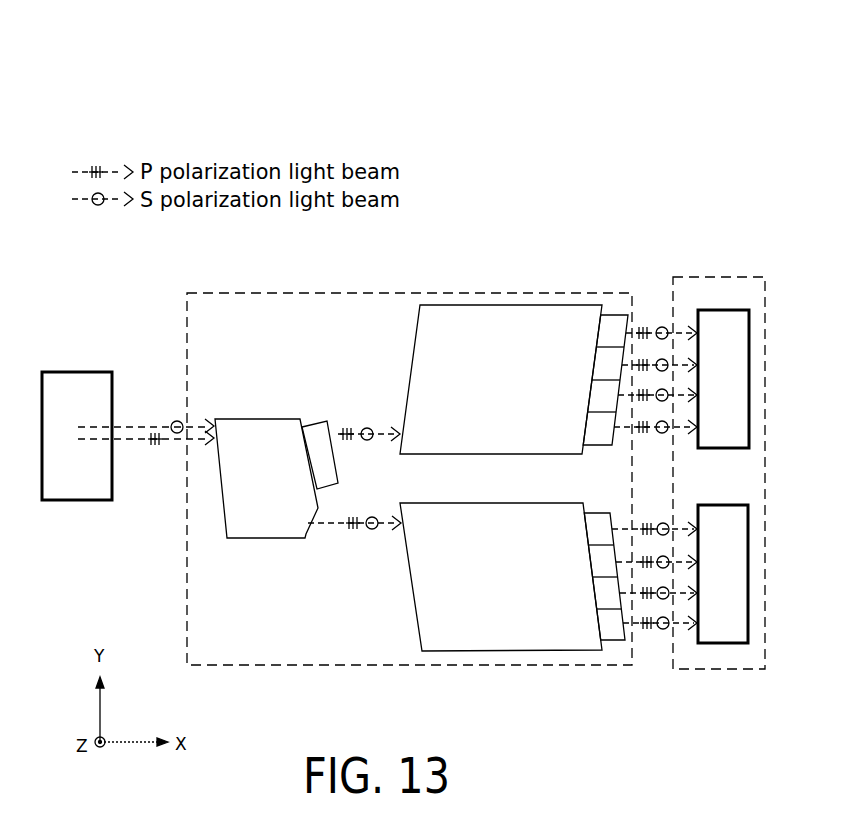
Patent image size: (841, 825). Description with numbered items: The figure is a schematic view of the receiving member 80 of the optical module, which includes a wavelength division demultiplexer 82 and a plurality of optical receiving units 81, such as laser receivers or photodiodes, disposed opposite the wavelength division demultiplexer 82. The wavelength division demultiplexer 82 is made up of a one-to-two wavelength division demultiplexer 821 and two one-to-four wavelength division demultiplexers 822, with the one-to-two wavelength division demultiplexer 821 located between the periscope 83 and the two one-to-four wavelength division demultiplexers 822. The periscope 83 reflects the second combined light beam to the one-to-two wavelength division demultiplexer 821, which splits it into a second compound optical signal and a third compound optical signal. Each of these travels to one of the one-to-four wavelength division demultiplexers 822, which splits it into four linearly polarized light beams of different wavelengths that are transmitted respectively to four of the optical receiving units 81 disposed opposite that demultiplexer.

The receiving member 80 is at (437, 133).
The optical receiving units 81 is at (722, 320).
The wavelength division demultiplexer 82 is at (518, 284).
The one-to-two wavelength division demultiplexer 821 is at (258, 437).
The one-to-four wavelength division demultiplexers 822 is at (432, 382).
The periscope 83 is at (65, 385).